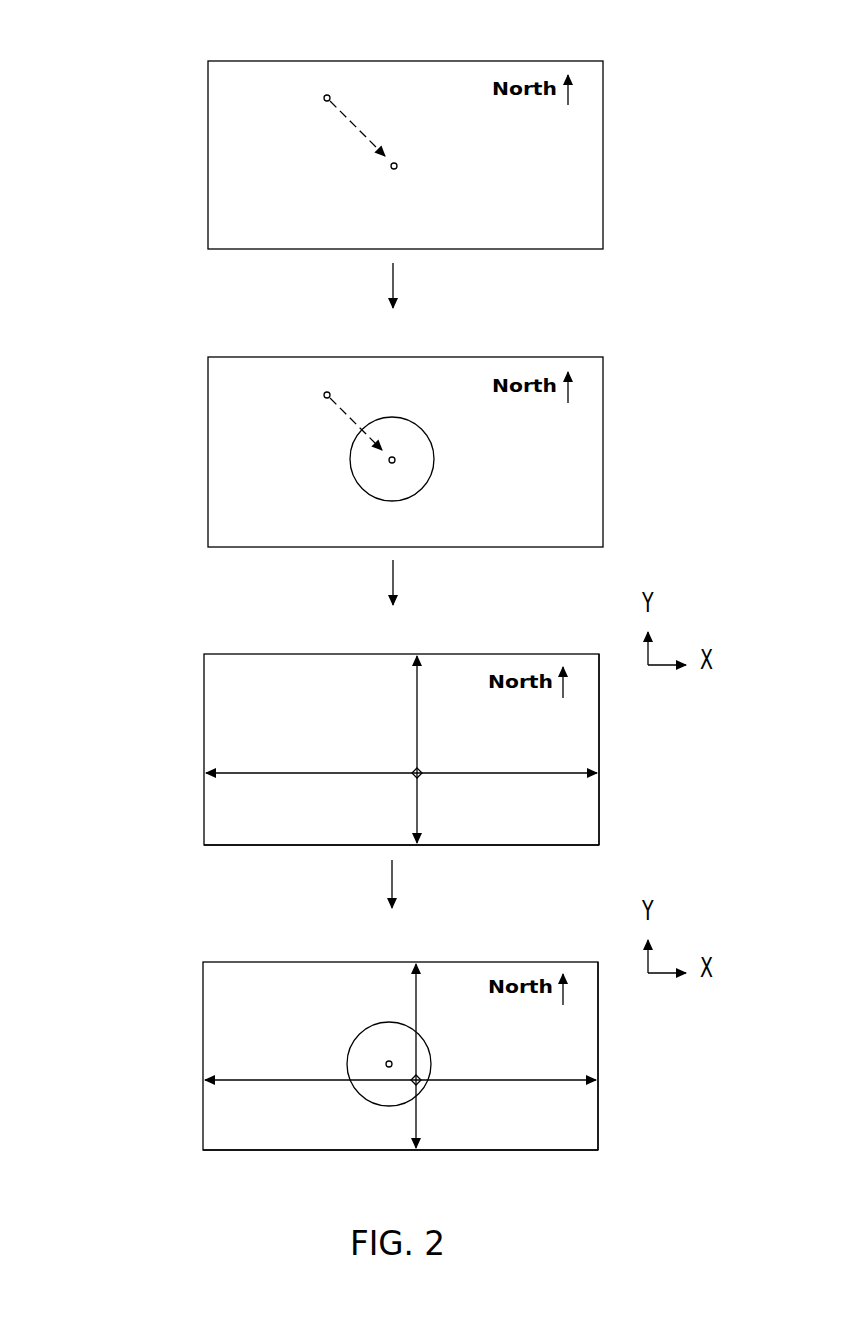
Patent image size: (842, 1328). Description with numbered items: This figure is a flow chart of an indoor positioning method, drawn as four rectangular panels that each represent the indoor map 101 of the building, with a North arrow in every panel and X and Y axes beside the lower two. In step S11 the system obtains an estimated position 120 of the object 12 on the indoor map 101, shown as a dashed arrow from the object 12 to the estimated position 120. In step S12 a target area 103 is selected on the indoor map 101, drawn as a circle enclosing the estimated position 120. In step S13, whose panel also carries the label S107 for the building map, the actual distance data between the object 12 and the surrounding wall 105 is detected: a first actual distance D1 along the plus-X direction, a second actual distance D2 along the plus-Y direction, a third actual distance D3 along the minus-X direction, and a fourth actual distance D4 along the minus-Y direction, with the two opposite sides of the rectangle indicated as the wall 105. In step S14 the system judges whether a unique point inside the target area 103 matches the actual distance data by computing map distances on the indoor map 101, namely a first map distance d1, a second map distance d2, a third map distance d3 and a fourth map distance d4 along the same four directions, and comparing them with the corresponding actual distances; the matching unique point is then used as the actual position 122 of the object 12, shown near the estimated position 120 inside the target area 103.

The indoor map 101 is at (243, 73).
The object 12 is at (327, 95).
The estimated position 120 is at (392, 170).
The target area 103 is at (353, 472).
The wall 105 is at (537, 845).
The actual position 122 is at (416, 1084).
The step of obtaining the estimated position S11 is at (146, 133).
The step of selecting a target area S12 is at (146, 447).
The step of detecting the actual distance data S13 is at (166, 761).
The step of judging a unique point S14 is at (165, 1066).
The step S107 is at (237, 654).
The 1st actual distance D1 is at (507, 756).
The 2nd actual distance D2 is at (396, 714).
The 3rd actual distance D3 is at (311, 754).
The 4th actual distance D4 is at (401, 808).
The 1st map distance d1 is at (506, 1065).
The 2nd map distance d2 is at (433, 1022).
The 3rd map distance d3 is at (310, 1063).
The 4th map distance d4 is at (434, 1114).